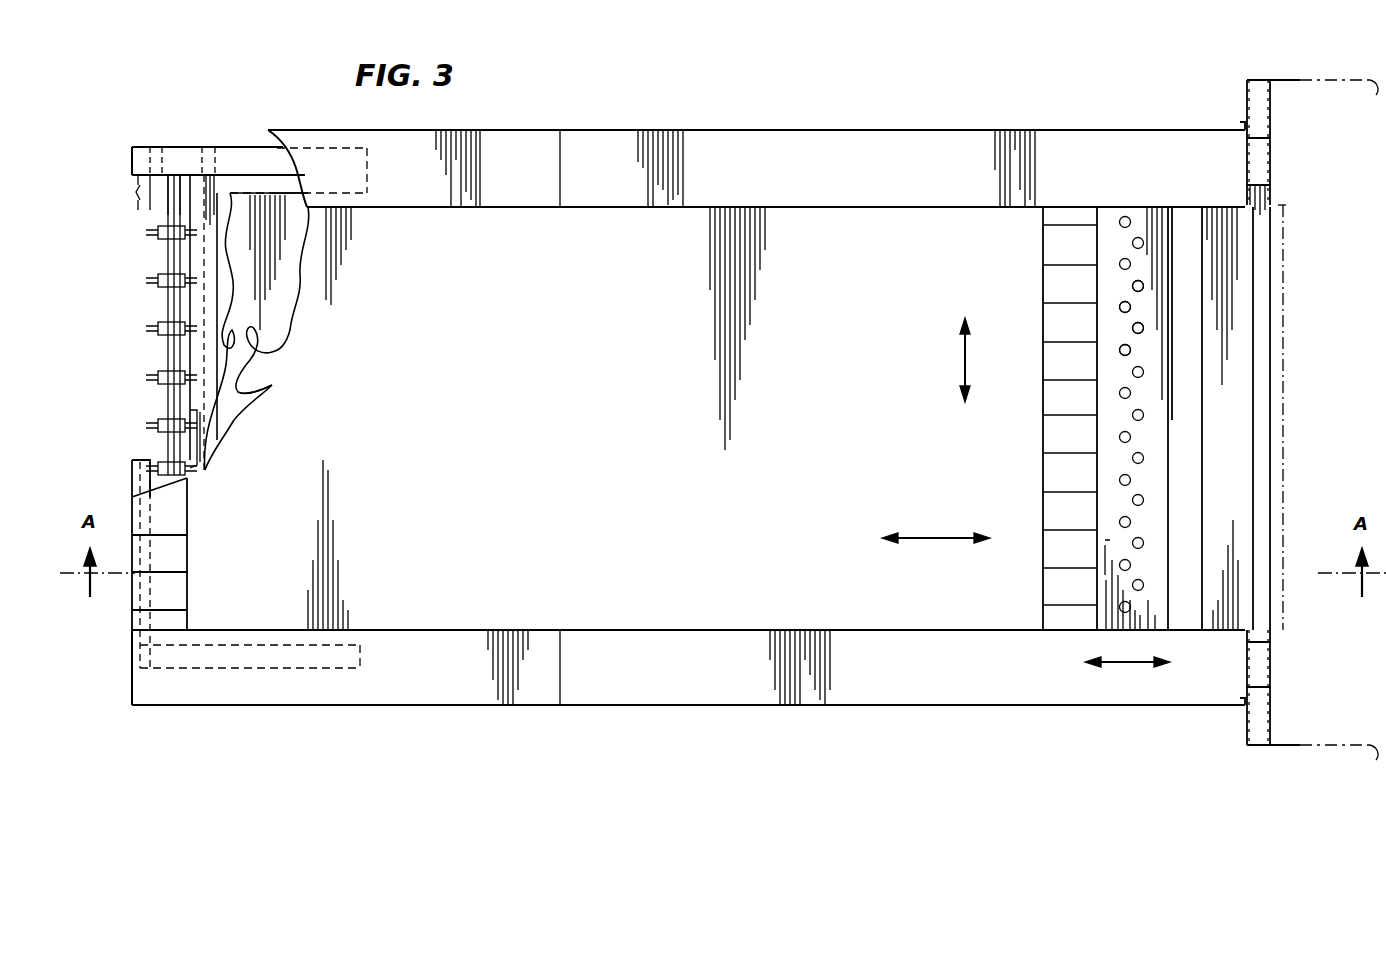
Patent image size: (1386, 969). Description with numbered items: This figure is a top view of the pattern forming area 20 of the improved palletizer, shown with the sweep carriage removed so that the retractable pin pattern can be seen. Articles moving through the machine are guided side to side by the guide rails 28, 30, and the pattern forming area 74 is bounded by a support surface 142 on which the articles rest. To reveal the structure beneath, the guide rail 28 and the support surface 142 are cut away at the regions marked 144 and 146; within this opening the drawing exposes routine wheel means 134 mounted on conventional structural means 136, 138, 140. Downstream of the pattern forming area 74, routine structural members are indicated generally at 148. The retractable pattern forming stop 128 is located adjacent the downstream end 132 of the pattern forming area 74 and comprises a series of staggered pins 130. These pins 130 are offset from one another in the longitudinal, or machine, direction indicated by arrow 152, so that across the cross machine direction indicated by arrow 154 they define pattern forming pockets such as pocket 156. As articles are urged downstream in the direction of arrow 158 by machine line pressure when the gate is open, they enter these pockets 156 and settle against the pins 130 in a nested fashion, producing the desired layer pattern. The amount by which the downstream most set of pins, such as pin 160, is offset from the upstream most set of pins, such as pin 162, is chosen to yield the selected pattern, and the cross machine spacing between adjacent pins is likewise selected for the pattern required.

The pattern forming area 20 is at (1366, 447).
The guide rail 28 is at (723, 178).
The guide rail 30 is at (648, 685).
The pattern forming area 74 is at (650, 417).
The retractable pattern forming stop 128 is at (1122, 96).
The staggered pins 130 is at (1131, 306).
The downstream end 132 is at (1156, 688).
The wheel means 134 is at (155, 332).
The structural means 136 is at (206, 118).
The structural means 138 is at (140, 194).
The structural means 140 is at (190, 207).
The support surface 142 is at (466, 357).
The cut away 144 is at (270, 346).
The cut away 146 is at (276, 386).
The structural members 148 is at (1222, 425).
The arrow indicating longitudinal direction 152 is at (1122, 664).
The arrow indicating cross machine direction 154 is at (964, 356).
The pattern forming pocket 156 is at (1122, 545).
The arrow indicating direction of article urging 158 is at (934, 540).
The downstream most pin 160 is at (1132, 585).
The upstream most pin 162 is at (1119, 607).